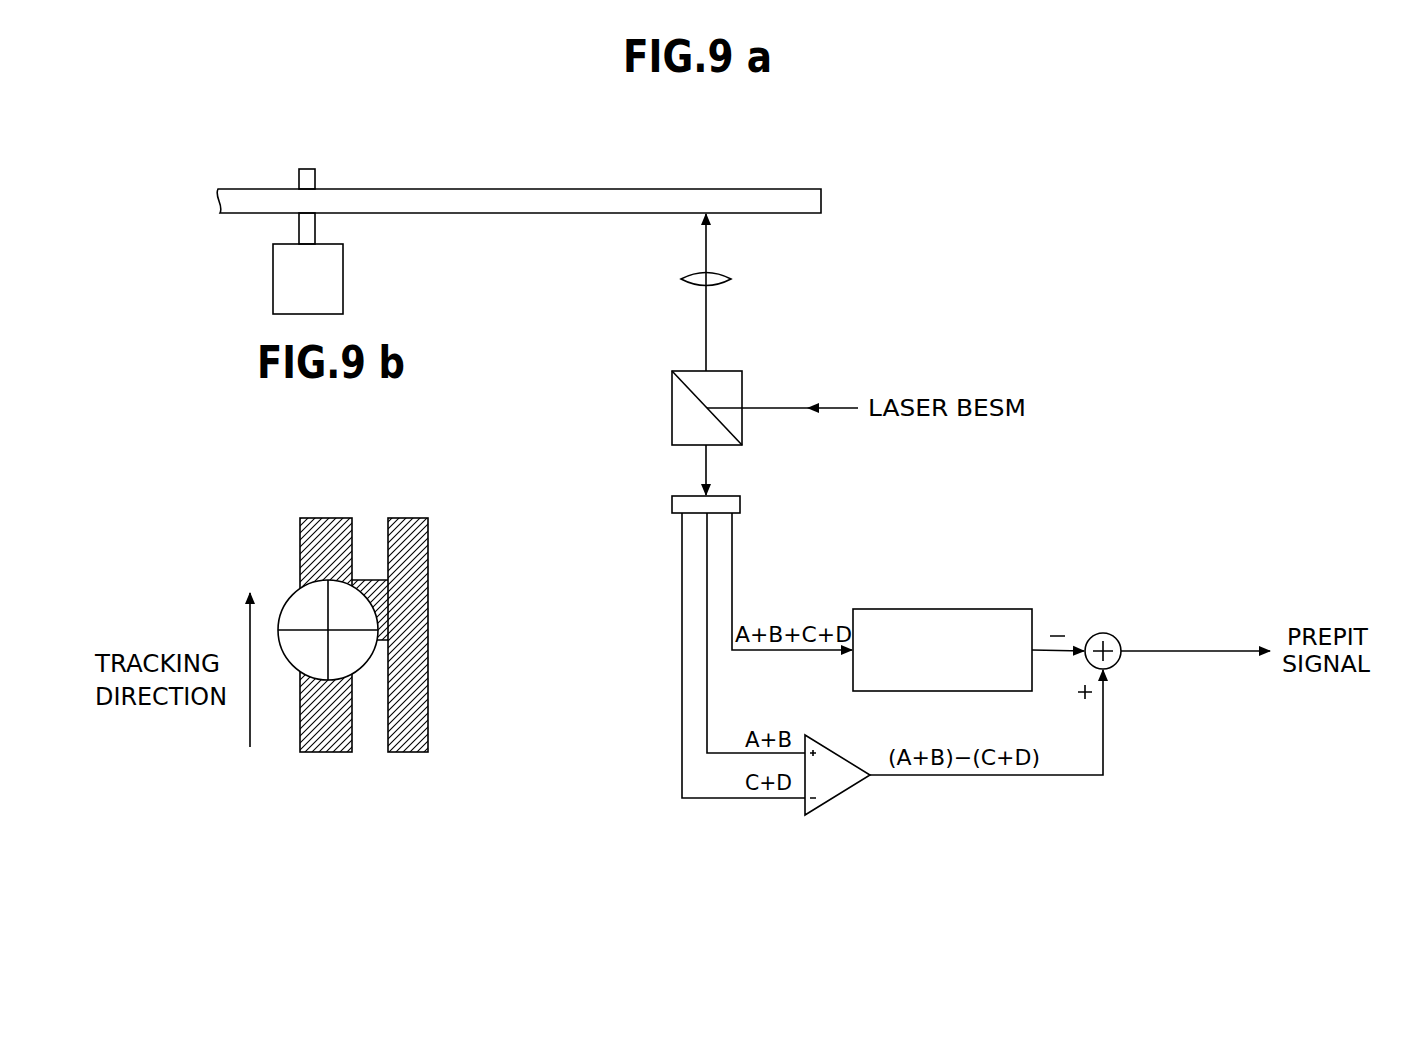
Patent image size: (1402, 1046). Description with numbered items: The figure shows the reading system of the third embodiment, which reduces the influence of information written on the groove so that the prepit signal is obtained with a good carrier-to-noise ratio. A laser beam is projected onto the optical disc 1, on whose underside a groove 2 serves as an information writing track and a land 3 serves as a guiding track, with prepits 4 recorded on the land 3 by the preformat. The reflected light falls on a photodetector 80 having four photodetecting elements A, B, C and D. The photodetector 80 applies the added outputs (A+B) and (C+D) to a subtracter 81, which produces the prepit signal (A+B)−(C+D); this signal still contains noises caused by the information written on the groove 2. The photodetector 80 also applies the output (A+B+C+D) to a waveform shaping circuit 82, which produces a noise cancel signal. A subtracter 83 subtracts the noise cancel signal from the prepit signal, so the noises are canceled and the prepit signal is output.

In FIG. 9a, the optical disc 1 is at (598, 196).
In FIG. 9b, the optical disc 1 is at (354, 623).
In FIG. 9b, the groove 2 is at (327, 550).
In FIG. 9b, the land 3 is at (372, 703).
In FIG. 9b, the prepit 4 is at (373, 588).
In FIG. 9a, the photodetector 80 is at (738, 507).
In FIG. 9b, the photodetector 80 is at (285, 600).
In FIG. 9a, the subtracter 81 is at (842, 765).
In FIG. 9a, the waveform shaping circuit 82 is at (965, 609).
In FIG. 9a, the subtracter 83 is at (1103, 633).